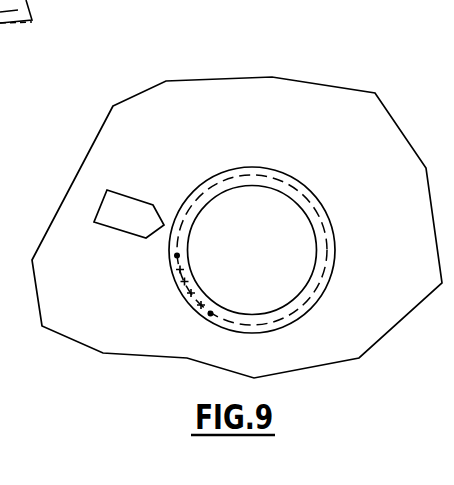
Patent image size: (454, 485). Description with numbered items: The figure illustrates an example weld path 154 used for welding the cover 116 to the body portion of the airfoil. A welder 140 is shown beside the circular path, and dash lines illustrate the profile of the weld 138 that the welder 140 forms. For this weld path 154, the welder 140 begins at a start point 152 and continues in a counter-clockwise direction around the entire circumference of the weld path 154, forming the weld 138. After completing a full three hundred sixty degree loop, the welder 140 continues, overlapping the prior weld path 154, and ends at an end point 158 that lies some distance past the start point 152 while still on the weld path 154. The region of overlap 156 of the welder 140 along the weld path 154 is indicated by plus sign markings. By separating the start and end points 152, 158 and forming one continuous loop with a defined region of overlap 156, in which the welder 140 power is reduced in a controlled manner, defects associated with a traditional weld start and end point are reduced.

The cover 116 is at (315, 107).
The weld 138 is at (299, 183).
The welder 140 is at (135, 197).
The start point 152 is at (174, 256).
The weld path 154 is at (297, 308).
The region of overlap 156 is at (185, 281).
The end point 158 is at (207, 314).